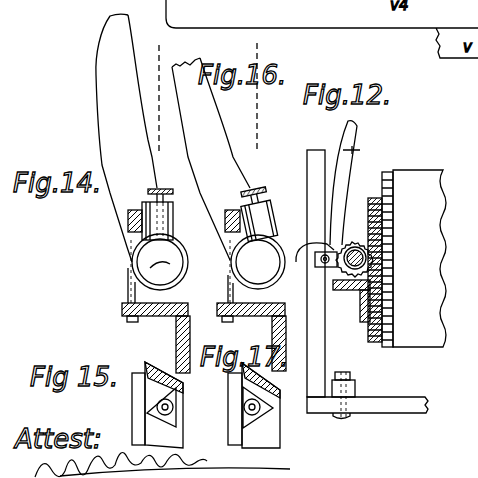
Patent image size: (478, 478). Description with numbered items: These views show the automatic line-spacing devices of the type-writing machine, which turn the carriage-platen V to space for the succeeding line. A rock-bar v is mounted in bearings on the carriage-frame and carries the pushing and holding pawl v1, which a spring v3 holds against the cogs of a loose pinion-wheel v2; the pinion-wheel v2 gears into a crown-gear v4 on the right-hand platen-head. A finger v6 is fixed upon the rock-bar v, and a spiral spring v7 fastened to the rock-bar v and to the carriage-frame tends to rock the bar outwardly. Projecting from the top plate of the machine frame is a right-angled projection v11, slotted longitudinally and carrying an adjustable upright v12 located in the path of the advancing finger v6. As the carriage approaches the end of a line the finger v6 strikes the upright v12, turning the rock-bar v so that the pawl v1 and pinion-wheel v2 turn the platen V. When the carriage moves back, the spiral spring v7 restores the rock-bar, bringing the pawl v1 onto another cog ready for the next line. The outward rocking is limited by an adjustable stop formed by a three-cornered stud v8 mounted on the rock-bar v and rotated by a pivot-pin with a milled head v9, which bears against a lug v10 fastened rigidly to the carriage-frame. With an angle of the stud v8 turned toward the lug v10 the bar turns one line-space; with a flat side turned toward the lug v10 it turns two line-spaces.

In FIG. 14, the rock-bar v is at (173, 268).
In FIG. 16, the rock-bar v is at (258, 262).
In FIG. 12, the rock-bar v is at (373, 263).
In FIG. 15, the rock-bar v is at (164, 405).
In FIG. 17, the rock-bar v is at (261, 405).
In FIG. 12, the carriage-platen V is at (419, 258).
In FIG. 12, the pushing and holding pawl v1 is at (311, 242).
In FIG. 12, the pinion-wheel v2 is at (357, 240).
In FIG. 12, the spring v3 is at (297, 266).
In FIG. 12, the crown-gear v4 is at (378, 198).
In FIG. 14, the finger v6 is at (126, 138).
In FIG. 16, the finger v6 is at (211, 159).
In FIG. 12, the finger v6 is at (348, 149).
In FIG. 14, the spiral spring v7 is at (132, 292).
In FIG. 16, the spiral spring v7 is at (230, 291).
In FIG. 14, the three-cornered stud v8 is at (173, 223).
In FIG. 16, the three-cornered stud v8 is at (276, 201).
In FIG. 15, the three-cornered stud v8 is at (175, 408).
In FIG. 17, the three-cornered stud v8 is at (240, 405).
In FIG. 14, the milled head v9 is at (161, 188).
In FIG. 16, the milled head v9 is at (255, 188).
In FIG. 15, the milled head v9 is at (178, 395).
In FIG. 17, the milled head v9 is at (270, 413).
In FIG. 15, the lug or projection v10 is at (134, 405).
In FIG. 17, the lug or projection v10 is at (233, 428).
In FIG. 12, the right-angled projection v11 is at (400, 402).
In FIG. 12, the adjustable upright v12 is at (323, 357).